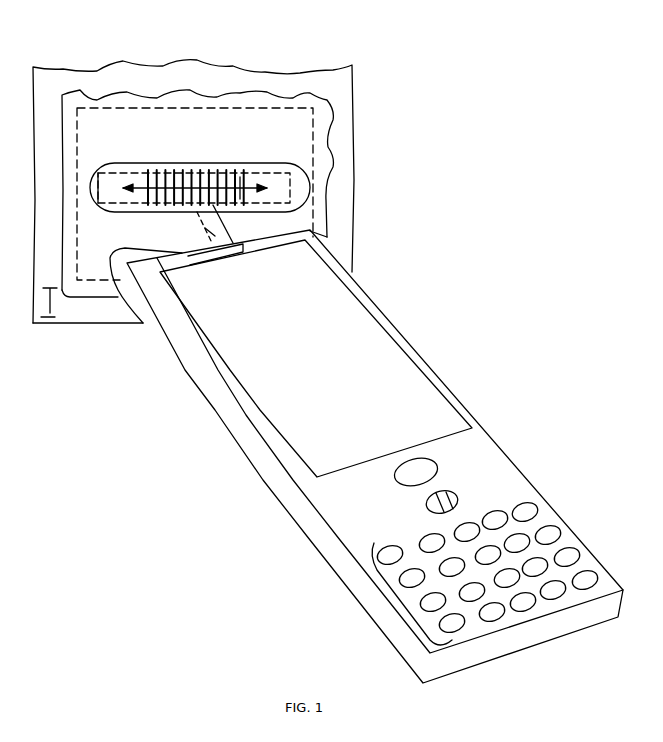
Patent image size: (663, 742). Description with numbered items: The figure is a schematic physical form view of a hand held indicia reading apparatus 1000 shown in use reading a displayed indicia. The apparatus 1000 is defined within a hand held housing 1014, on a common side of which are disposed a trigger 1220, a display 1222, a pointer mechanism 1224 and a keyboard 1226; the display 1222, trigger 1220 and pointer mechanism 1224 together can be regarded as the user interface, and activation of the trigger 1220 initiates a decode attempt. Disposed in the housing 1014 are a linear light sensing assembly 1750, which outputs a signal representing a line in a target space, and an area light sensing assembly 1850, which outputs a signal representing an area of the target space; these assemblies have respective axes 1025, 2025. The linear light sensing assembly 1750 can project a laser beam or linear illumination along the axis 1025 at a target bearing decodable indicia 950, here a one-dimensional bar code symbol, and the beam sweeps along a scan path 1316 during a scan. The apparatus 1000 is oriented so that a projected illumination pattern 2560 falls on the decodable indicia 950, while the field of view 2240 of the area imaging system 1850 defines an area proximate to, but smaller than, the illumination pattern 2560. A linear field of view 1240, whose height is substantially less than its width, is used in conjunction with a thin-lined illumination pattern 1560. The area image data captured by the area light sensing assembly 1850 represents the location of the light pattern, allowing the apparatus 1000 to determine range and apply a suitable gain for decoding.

The indicia reading apparatus 1000 is at (386, 439).
The hand held housing 1014 is at (578, 542).
The trigger 1220 is at (438, 468).
The display 1222 is at (450, 402).
The pointer mechanism 1224 is at (460, 495).
The keyboard 1226 is at (378, 612).
The linear light sensing assembly 1750 is at (103, 297).
The area light sensing assembly 1850 is at (317, 231).
The field of view 2240 is at (313, 137).
The projected illumination pattern 2560 is at (308, 93).
The linear field of view 1240 is at (110, 173).
The thin-lined illumination pattern 1560 is at (165, 172).
The decodable indicia 950 is at (240, 177).
The scan path 1316 is at (262, 180).
The axis 1025 is at (210, 230).
The axis 2025 is at (228, 223).